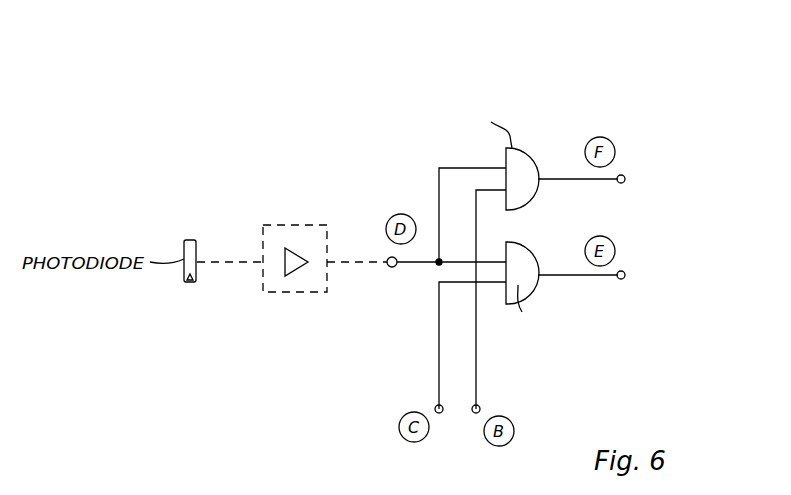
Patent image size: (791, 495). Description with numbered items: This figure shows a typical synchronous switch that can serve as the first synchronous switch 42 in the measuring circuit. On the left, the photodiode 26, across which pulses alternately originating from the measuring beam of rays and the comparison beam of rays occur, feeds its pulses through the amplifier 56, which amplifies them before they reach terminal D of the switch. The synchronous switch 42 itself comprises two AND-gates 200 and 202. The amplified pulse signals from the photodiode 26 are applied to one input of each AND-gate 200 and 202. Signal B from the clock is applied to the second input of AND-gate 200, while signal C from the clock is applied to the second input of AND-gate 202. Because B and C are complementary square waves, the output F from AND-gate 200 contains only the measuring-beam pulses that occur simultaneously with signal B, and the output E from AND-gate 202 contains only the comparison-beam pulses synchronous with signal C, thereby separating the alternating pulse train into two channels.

The photodiode 26 is at (191, 282).
The amplifier 56 is at (285, 291).
The AND-gate 200 is at (523, 168).
The AND-gate 202 is at (524, 266).
The first synchronous switch 42 is at (333, 378).